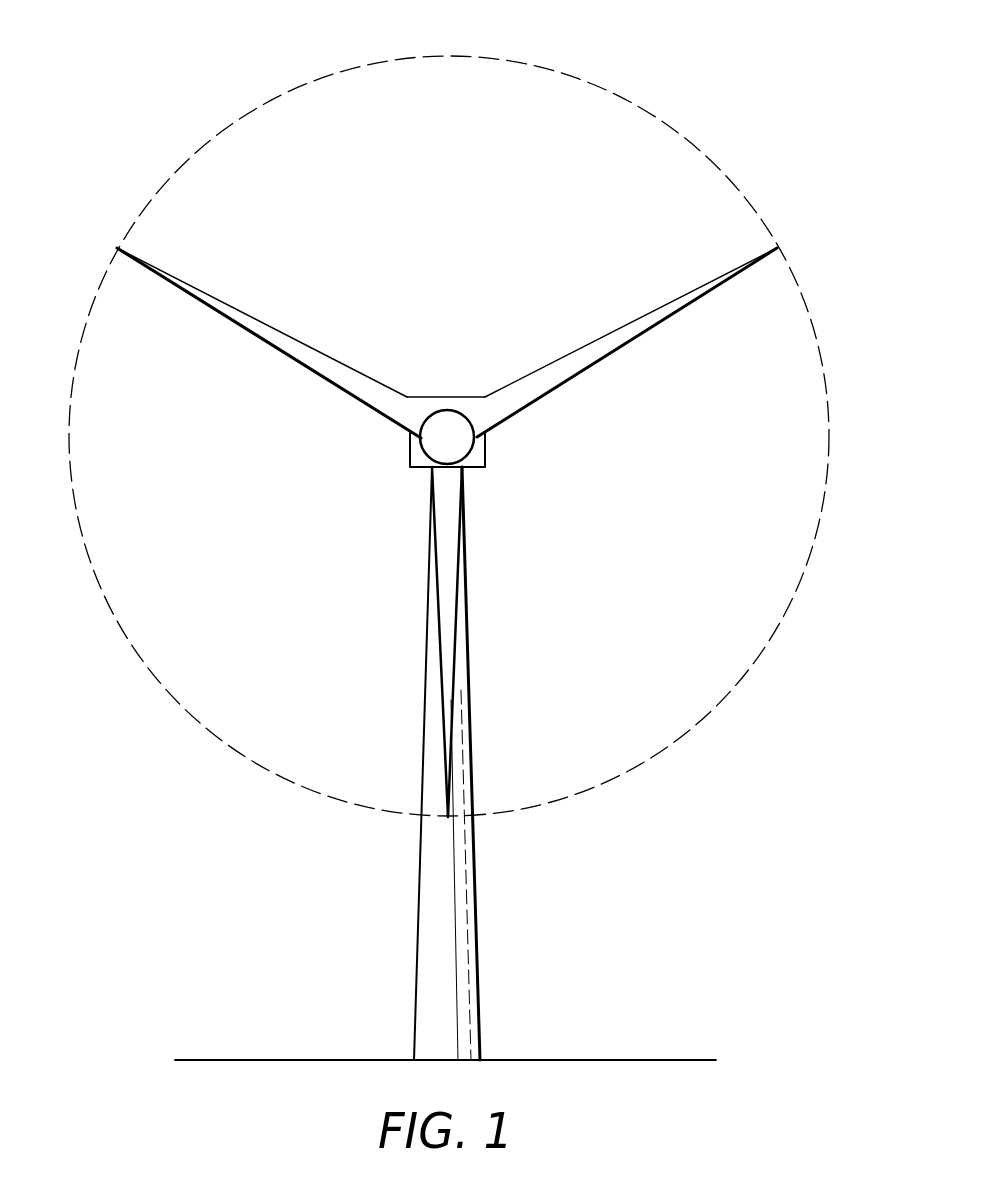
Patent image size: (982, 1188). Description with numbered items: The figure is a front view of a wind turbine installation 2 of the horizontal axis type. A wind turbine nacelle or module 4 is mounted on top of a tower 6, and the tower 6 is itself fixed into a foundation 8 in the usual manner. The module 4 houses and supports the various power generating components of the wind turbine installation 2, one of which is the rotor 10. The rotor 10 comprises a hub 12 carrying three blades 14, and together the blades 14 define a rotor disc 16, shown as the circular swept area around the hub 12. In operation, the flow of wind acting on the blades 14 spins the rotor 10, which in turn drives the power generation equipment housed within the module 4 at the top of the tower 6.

The wind turbine installation 2 is at (449, 535).
The wind turbine nacelle or module 4 is at (450, 396).
The tower 6 is at (478, 873).
The foundation 8 is at (660, 1059).
The rotor 10 is at (447, 532).
The hub 12 is at (432, 441).
The blades 14 is at (450, 549).
The rotor disc 16 is at (688, 731).